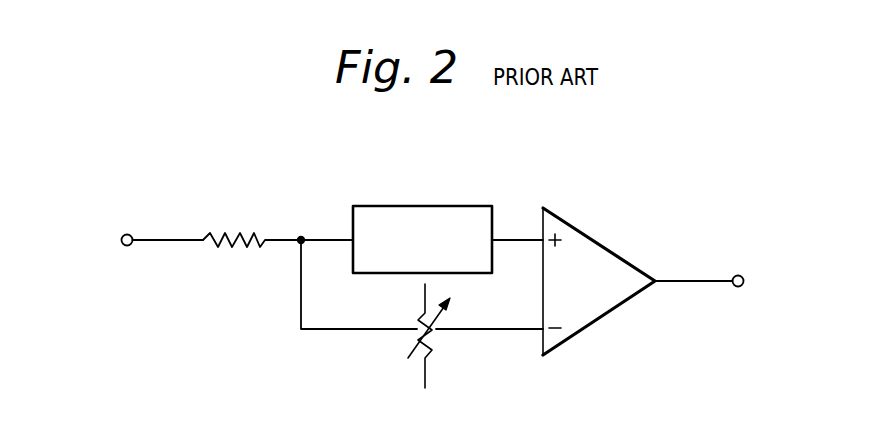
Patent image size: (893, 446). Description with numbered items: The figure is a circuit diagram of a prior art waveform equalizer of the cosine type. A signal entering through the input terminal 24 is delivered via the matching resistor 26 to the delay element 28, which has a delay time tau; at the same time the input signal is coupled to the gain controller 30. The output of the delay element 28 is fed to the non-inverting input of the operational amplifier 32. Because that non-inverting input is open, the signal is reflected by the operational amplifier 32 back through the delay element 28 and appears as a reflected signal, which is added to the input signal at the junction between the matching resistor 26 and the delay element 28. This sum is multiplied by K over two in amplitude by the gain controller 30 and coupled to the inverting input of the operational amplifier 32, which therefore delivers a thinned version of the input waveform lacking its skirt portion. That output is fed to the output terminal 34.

The input terminal 24 is at (127, 234).
The matching resistor 26 is at (228, 232).
The delay element 28 is at (428, 203).
The gain controller 30 is at (427, 342).
The operational amplifier 32 is at (601, 240).
The output terminal 34 is at (738, 275).